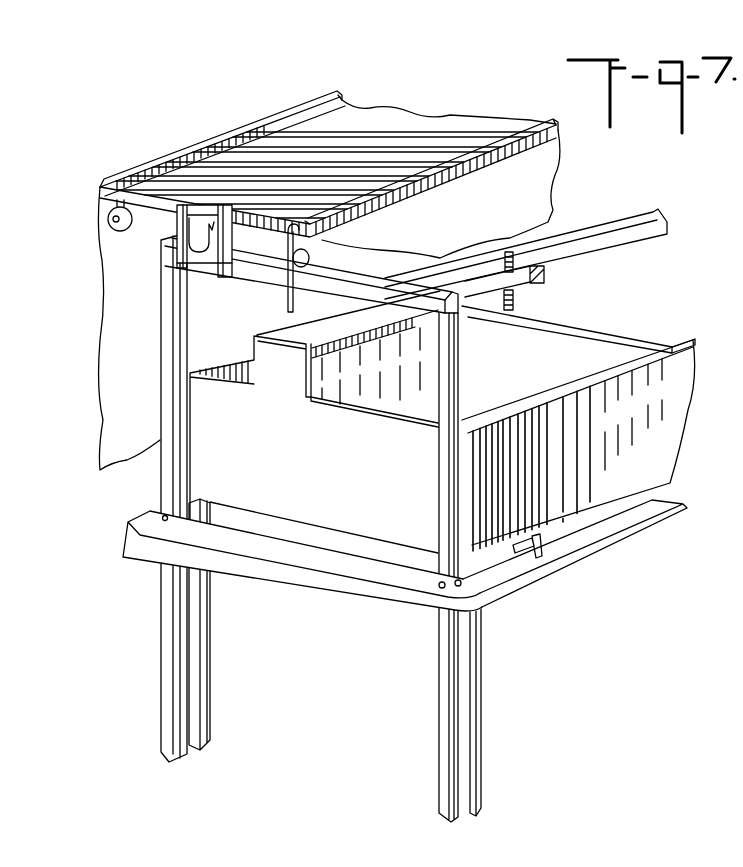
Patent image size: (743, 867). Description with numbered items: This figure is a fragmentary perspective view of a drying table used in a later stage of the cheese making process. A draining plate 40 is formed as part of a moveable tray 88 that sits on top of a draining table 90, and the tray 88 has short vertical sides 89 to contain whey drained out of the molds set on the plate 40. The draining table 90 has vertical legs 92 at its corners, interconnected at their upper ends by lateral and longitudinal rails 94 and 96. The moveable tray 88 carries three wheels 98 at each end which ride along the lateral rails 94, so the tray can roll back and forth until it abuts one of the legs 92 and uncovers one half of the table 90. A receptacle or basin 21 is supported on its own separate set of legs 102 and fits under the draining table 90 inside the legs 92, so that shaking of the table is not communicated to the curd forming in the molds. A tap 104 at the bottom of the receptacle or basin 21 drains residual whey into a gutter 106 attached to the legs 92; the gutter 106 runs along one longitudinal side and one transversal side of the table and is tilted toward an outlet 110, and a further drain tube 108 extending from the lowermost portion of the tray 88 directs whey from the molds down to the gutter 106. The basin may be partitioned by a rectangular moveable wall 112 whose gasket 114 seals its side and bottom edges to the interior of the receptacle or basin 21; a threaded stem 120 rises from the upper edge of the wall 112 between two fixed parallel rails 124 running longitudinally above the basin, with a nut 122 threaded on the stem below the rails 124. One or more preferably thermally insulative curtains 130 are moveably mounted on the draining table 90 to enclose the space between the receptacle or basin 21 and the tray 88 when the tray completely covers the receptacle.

The receptacle or basin 21 is at (203, 482).
The draining plate 40 is at (403, 123).
The moveable tray 88 is at (262, 127).
The short vertical sides 89 is at (306, 118).
The draining table 90 is at (73, 272).
The vertical legs 92 is at (173, 370).
The lateral rails 94 is at (395, 283).
The longitudinal rails 96 is at (630, 247).
The wheels 98 is at (120, 231).
The legs 102 is at (212, 700).
The tap 104 is at (543, 557).
The gutter 106 is at (647, 523).
The drain tube 108 is at (277, 297).
The outlet 110 is at (120, 557).
The moveable wall 112 is at (630, 338).
The gasket 114 is at (677, 342).
The threaded stem 120 is at (508, 250).
The nut 122 is at (527, 288).
The fixed parallel rails 124 is at (327, 325).
The curtains 130 is at (97, 307).